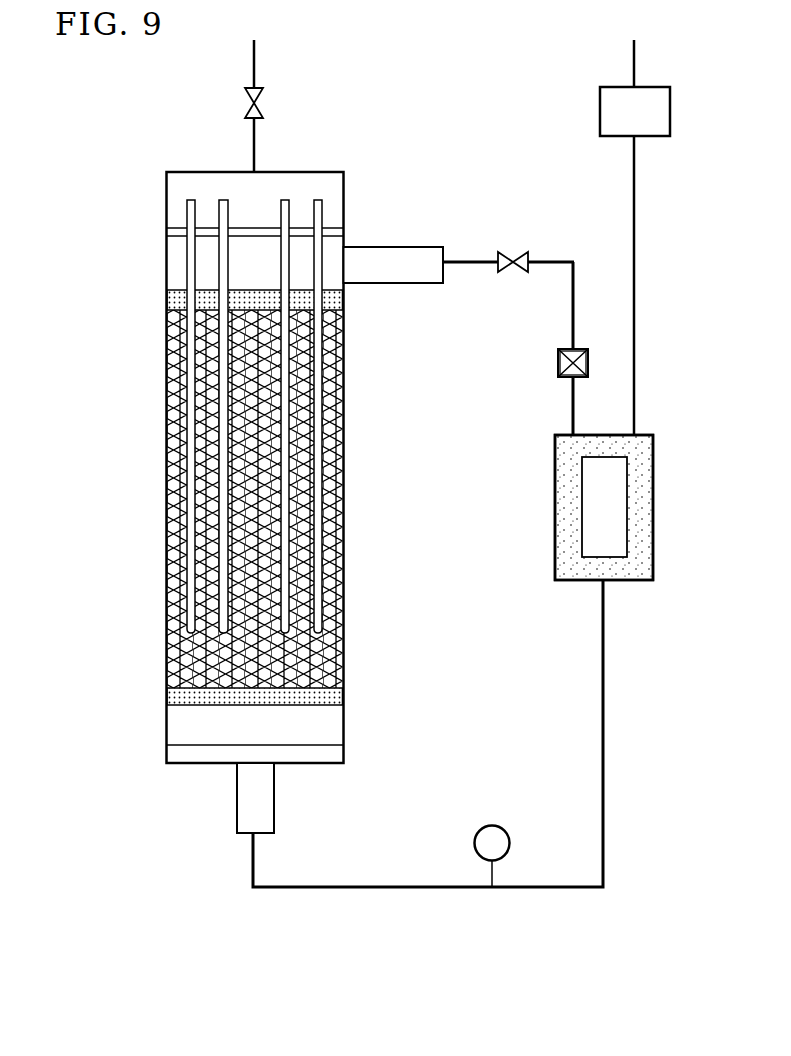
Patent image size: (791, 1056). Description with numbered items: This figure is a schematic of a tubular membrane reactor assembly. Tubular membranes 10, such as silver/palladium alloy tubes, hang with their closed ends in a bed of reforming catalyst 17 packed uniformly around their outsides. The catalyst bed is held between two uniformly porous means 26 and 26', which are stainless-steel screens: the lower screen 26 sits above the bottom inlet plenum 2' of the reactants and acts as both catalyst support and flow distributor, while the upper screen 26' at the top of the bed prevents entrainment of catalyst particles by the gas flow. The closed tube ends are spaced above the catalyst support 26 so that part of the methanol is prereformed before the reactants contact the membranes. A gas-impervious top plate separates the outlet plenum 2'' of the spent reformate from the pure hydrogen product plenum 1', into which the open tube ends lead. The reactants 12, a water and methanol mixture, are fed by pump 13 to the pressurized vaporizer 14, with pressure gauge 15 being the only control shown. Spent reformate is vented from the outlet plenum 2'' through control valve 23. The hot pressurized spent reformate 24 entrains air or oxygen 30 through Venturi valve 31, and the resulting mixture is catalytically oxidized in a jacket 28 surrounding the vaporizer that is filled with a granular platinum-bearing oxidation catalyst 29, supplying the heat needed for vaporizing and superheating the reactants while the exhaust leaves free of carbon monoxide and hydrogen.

The pure hydrogen product plenum 1' is at (252, 198).
The bottom inlet plenum 2' is at (252, 726).
The outlet plenum of the spent reformate 2'' is at (252, 260).
The tubular membranes 10 is at (190, 470).
The reactants 12 is at (634, 223).
The pump 13 is at (650, 121).
The pressurized vaporizer 14 is at (590, 515).
The pressure gauge 15 is at (484, 828).
The reforming catalyst 17 is at (175, 378).
The control valve 23 is at (521, 241).
The hot pressurized spent reformate 24 is at (573, 303).
The porous catalyst support 26 is at (226, 700).
The porous screen 26' is at (219, 300).
The jacket 28 is at (556, 468).
The oxidation catalyst 29 is at (247, 104).
The air or oxygen 30 is at (558, 356).
The Venturi valve 31 is at (558, 370).